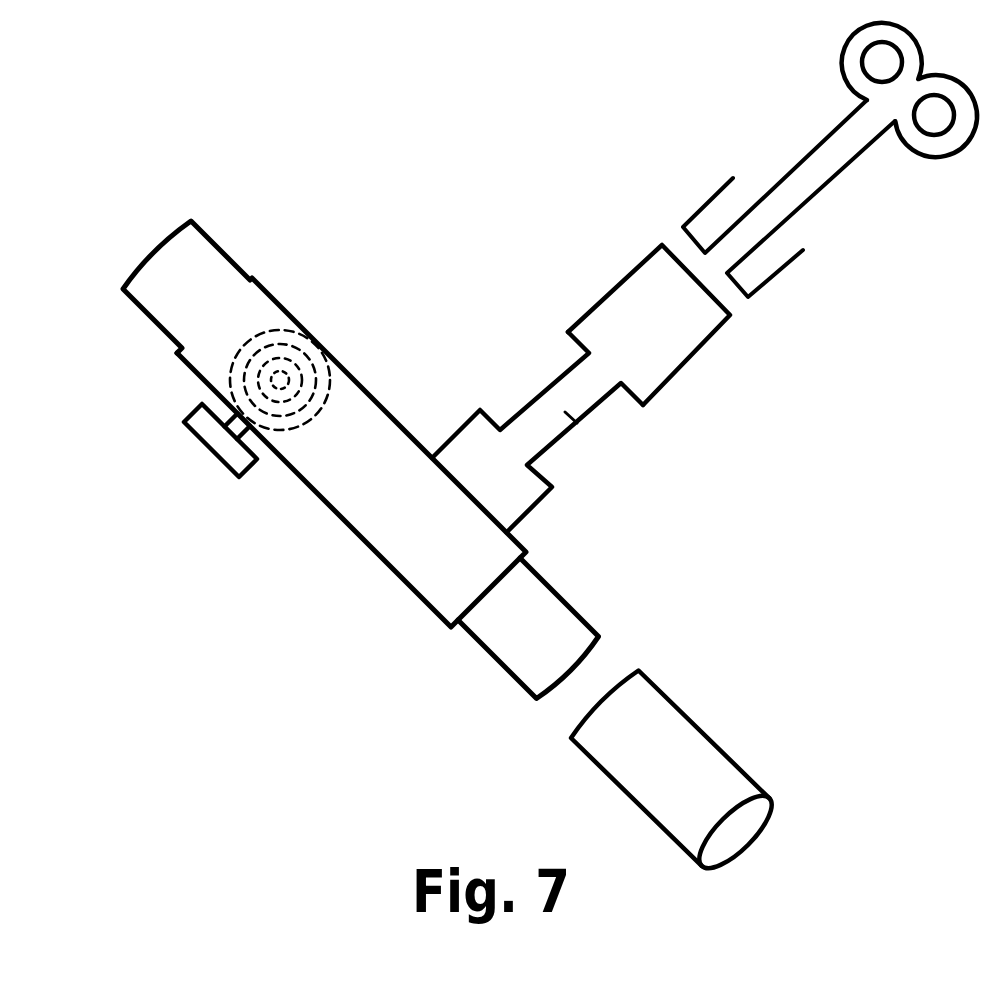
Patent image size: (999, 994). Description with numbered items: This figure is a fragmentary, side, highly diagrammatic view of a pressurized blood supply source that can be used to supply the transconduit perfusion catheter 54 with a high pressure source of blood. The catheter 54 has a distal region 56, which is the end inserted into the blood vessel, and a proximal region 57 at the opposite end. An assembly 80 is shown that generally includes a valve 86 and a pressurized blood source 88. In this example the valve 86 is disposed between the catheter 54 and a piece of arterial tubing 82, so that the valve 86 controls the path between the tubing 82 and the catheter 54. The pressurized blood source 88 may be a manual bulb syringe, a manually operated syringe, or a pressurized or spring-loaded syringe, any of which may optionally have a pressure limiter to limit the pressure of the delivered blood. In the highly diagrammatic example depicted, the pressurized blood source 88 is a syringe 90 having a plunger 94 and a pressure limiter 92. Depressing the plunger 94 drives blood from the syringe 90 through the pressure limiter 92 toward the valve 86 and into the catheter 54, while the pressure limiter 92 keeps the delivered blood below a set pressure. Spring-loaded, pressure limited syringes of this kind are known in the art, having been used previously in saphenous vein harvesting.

The transconduit perfusion catheter 54 is at (673, 705).
The distal region 56 is at (768, 797).
The proximal region 57 is at (553, 590).
The assembly 80 is at (255, 527).
The arterial tubing 82 is at (143, 310).
The valve 86 is at (197, 440).
The pressurized blood source 88 is at (704, 278).
The syringe 90 is at (632, 272).
The pressure limiter 92 is at (553, 402).
The plunger 94 is at (830, 172).